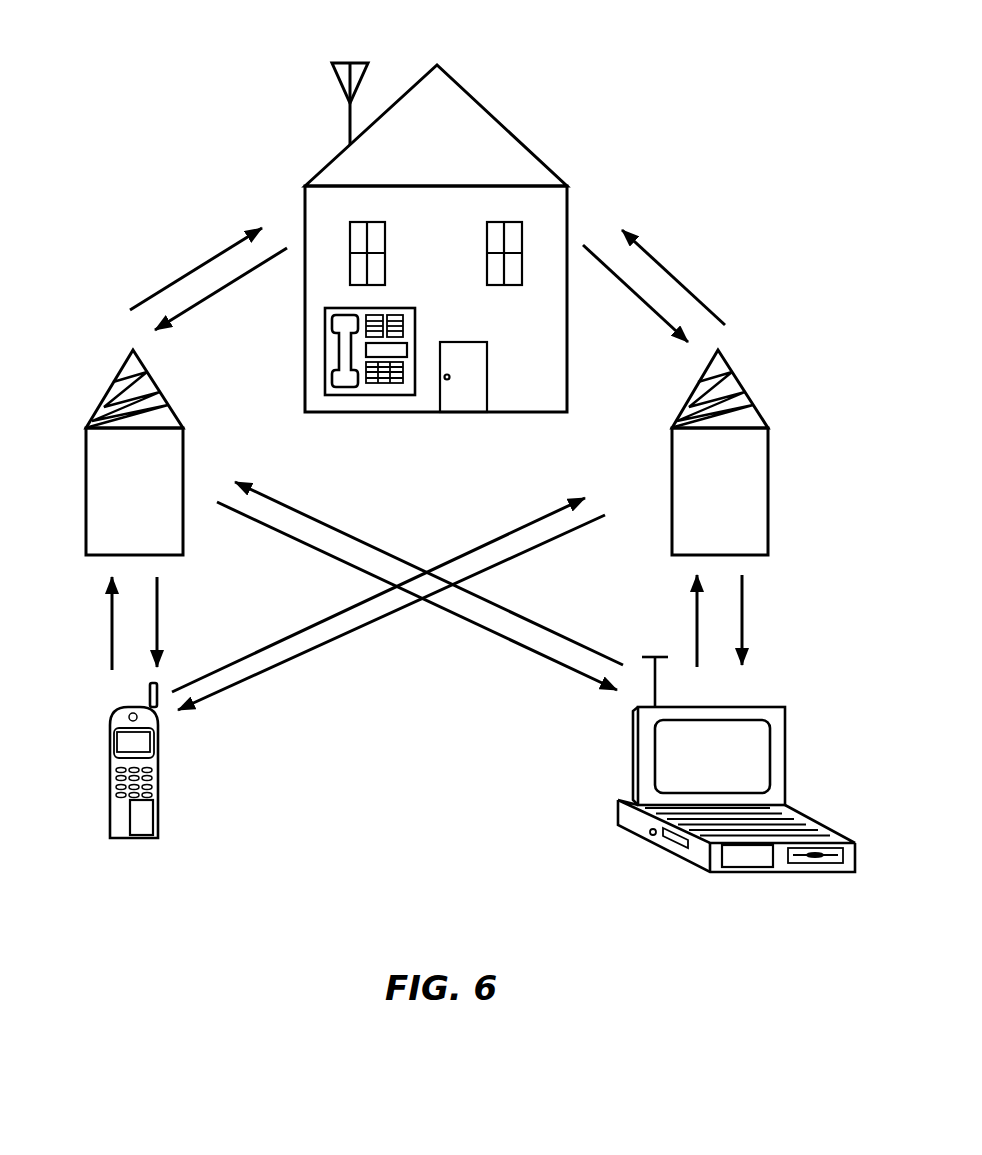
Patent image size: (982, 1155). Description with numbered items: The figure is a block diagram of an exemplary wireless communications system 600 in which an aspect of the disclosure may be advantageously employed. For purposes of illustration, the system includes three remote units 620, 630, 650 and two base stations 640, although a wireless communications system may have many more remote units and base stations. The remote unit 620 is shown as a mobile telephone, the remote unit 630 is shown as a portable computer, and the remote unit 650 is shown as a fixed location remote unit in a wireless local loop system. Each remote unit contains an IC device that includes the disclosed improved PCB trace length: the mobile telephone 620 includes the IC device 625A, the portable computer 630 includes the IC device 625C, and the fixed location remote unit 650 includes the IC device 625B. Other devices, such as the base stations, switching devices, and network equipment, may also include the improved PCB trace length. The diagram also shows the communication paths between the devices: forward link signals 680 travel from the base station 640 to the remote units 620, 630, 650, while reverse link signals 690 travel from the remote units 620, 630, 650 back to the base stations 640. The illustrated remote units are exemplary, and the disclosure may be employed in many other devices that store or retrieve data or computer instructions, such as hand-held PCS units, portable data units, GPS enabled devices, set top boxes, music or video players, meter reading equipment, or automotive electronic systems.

The wireless communications system 600 is at (150, 103).
The remote unit 620 is at (112, 717).
The IC device 625A is at (143, 823).
The IC device 625B is at (395, 350).
The IC device 625C is at (755, 858).
The remote unit 630 is at (763, 703).
The base station 640 is at (110, 385).
The remote unit 650 is at (325, 365).
The forward link signals 680 is at (203, 263).
The reverse link signals 690 is at (205, 300).